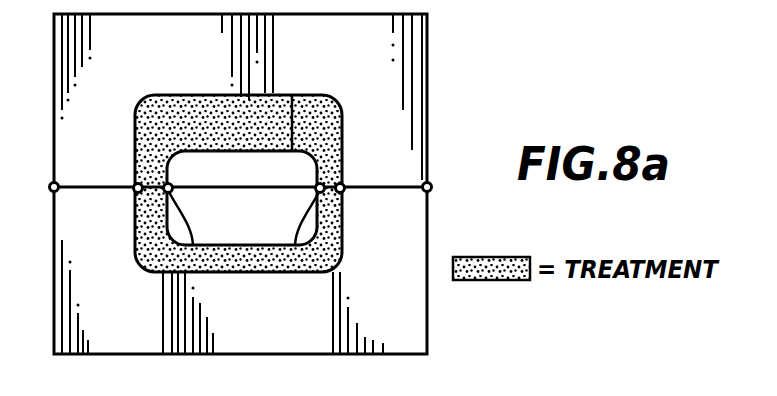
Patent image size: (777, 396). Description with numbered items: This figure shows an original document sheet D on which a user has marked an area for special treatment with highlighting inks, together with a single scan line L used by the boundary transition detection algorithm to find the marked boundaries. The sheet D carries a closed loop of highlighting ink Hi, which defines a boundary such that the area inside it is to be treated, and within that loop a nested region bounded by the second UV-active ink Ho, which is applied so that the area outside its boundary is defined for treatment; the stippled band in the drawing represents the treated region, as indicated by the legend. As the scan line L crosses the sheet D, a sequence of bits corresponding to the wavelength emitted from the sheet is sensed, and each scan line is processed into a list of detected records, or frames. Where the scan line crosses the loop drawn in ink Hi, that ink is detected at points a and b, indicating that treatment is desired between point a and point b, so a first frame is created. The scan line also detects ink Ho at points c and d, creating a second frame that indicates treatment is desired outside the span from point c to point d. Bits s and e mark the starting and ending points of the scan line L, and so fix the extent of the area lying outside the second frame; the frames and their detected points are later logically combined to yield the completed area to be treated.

The scan line L is at (95, 162).
The original document sheet D is at (428, 98).
The highlighting ink (outside-boundary type) Ho is at (293, 96).
The highlighting ink (inside-boundary type) Hi is at (341, 145).
The starting point of scan line s is at (51, 191).
The ending point of scan line e is at (430, 192).
The detection point a is at (135, 192).
The detection point b is at (343, 192).
The detection point c is at (193, 245).
The detection point d is at (295, 245).